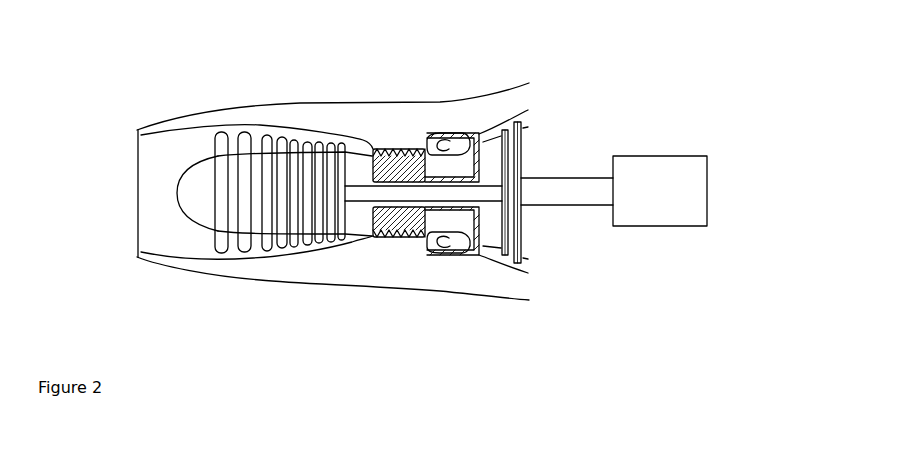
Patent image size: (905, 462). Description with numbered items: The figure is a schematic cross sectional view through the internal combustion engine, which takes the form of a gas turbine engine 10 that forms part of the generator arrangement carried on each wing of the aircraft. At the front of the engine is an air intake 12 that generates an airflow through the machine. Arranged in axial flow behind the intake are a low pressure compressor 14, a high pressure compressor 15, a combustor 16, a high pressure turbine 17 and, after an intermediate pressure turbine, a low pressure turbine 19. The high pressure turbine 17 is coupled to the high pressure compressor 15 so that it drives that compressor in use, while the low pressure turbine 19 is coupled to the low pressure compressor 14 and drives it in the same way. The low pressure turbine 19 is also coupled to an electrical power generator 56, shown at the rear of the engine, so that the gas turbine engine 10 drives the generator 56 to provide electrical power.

The gas turbine engine 10 is at (420, 128).
The air intake 12 is at (138, 241).
The low pressure compressor 14 is at (240, 243).
The high pressure compressor 15 is at (367, 240).
The combustor 16 is at (440, 249).
The high pressure turbine 17 is at (470, 253).
The low pressure turbine 19 is at (523, 158).
The electrical power generator 56 is at (707, 167).